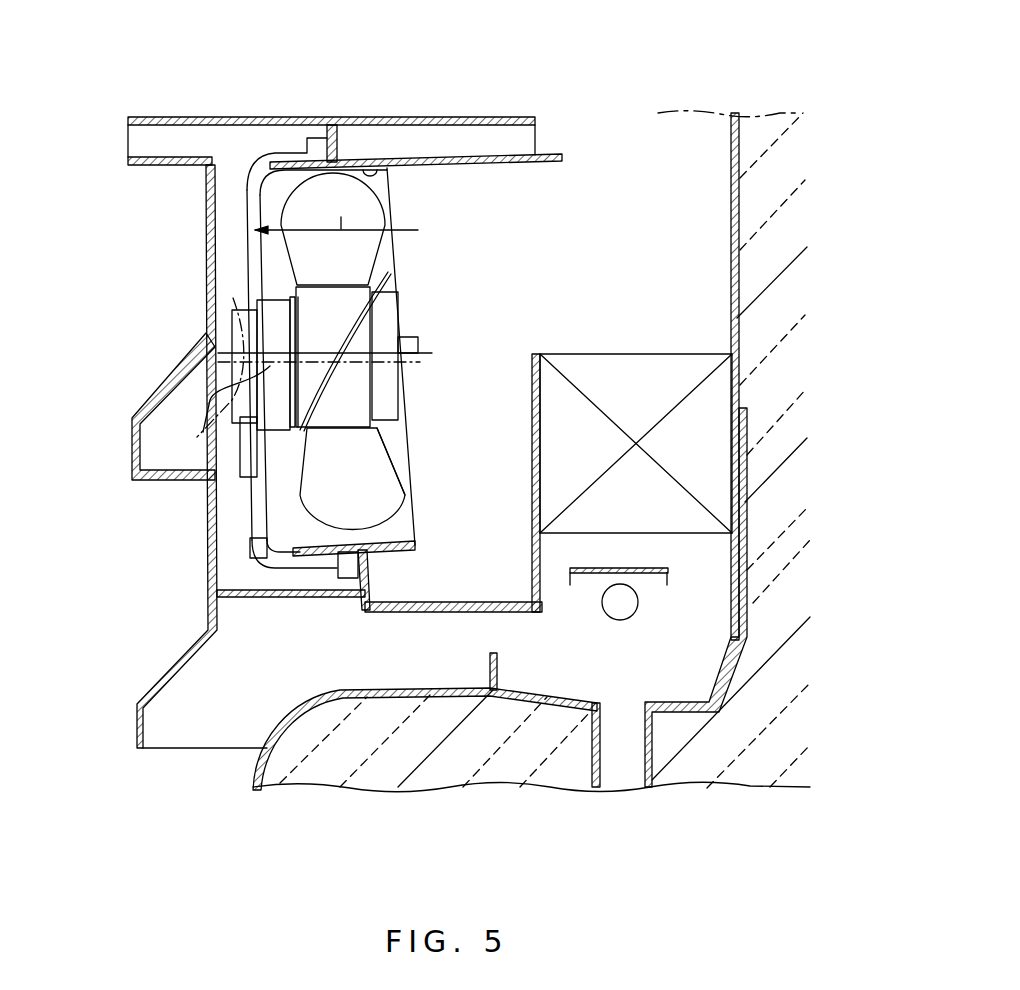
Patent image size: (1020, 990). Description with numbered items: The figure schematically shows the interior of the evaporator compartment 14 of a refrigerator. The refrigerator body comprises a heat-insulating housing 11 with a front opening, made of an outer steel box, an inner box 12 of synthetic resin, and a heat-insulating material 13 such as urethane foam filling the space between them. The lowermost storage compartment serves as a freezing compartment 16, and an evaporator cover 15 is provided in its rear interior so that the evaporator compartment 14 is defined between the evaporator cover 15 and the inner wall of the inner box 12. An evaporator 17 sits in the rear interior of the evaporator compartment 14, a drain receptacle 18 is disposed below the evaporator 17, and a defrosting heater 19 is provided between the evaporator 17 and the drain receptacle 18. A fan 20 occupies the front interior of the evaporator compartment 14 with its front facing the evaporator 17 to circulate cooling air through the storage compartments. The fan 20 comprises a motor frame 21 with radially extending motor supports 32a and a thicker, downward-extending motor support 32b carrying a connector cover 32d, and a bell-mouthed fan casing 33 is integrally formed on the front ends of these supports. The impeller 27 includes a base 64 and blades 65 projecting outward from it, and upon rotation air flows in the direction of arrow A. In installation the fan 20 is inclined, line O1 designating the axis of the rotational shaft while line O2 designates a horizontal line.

The heat-insulating housing 11 is at (808, 150).
The inner box 12 is at (732, 185).
The heat-insulating material 13 is at (770, 248).
The evaporator compartment 14 is at (687, 306).
The evaporator cover 15 is at (207, 531).
The freezing compartment 16 is at (172, 323).
The evaporator 17 is at (697, 455).
The drain receptacle 18 is at (487, 663).
The defrosting heater 19 is at (638, 612).
The fan 20 is at (405, 183).
The motor frame 21 is at (230, 480).
The impeller 27 is at (402, 460).
The motor support 32a is at (250, 158).
The motor support 32b is at (265, 555).
The connector cover 32d is at (213, 568).
The fan casing 33 is at (387, 160).
The base 64 is at (385, 357).
The blades 65 is at (380, 505).
The axis of the rotational shaft O1 is at (225, 413).
The horizontal line O2 is at (224, 354).